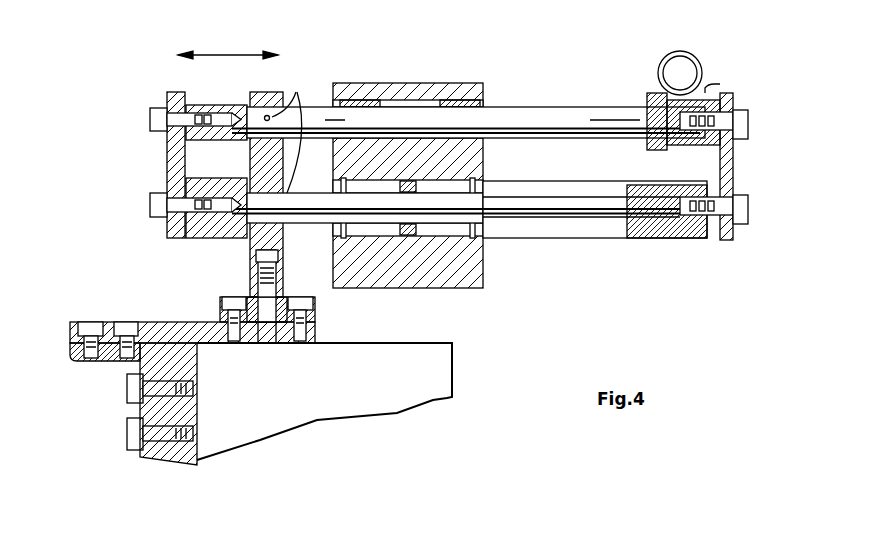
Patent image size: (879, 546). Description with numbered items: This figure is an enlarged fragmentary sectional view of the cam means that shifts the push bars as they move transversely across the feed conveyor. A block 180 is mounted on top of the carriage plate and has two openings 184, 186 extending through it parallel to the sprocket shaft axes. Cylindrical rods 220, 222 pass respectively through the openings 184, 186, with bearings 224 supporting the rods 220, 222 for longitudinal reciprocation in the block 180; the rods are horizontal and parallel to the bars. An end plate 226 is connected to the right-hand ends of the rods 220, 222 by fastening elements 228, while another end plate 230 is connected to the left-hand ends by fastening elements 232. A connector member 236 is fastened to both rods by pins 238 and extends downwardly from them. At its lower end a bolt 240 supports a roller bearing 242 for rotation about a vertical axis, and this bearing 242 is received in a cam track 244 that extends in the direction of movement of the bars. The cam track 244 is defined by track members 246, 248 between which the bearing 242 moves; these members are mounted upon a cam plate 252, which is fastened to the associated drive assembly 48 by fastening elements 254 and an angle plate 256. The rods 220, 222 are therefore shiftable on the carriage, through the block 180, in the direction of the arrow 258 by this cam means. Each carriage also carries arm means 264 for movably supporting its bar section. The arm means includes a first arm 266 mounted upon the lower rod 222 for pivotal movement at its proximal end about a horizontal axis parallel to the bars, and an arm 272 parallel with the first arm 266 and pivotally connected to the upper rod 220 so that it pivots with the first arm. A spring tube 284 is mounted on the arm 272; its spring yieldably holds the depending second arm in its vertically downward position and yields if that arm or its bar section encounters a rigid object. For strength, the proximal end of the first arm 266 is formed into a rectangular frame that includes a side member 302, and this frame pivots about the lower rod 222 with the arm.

The drive assembly 48 is at (370, 395).
The block 180 is at (443, 92).
The opening 184 is at (410, 108).
The opening 186 is at (445, 230).
The upper rod 220 is at (544, 117).
The lower rod 222 is at (597, 220).
The bearings 224 is at (334, 103).
The end plate 226 is at (728, 178).
The fastening elements 228 is at (750, 123).
The end plate 230 is at (172, 155).
The fastening elements 232 is at (152, 112).
The connector member 236 is at (252, 245).
The pins 238 is at (290, 129).
The bolt 240 is at (284, 286).
The roller bearing 242 is at (268, 320).
The cam track 244 is at (258, 344).
The track member 246 is at (223, 311).
The track member 248 is at (316, 321).
The cam plate 252 is at (182, 323).
The fastening elements 254 is at (118, 324).
The angle plate 256 is at (196, 368).
The arrow 258 is at (245, 55).
The arm means 264 is at (717, 82).
The first arm 266 is at (693, 238).
The arm 272 is at (712, 92).
The spring tube 284 is at (657, 63).
The side member 302 is at (214, 178).